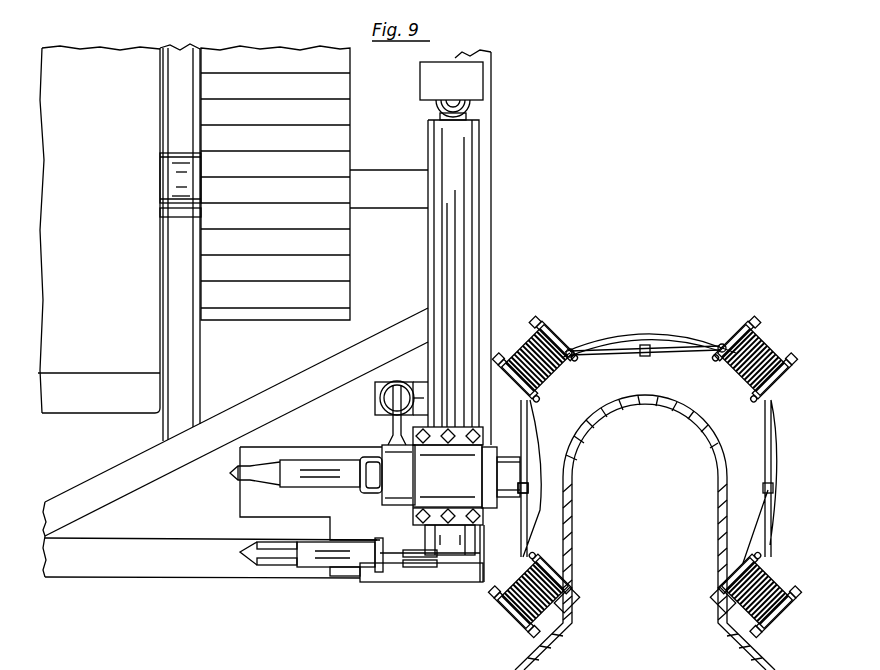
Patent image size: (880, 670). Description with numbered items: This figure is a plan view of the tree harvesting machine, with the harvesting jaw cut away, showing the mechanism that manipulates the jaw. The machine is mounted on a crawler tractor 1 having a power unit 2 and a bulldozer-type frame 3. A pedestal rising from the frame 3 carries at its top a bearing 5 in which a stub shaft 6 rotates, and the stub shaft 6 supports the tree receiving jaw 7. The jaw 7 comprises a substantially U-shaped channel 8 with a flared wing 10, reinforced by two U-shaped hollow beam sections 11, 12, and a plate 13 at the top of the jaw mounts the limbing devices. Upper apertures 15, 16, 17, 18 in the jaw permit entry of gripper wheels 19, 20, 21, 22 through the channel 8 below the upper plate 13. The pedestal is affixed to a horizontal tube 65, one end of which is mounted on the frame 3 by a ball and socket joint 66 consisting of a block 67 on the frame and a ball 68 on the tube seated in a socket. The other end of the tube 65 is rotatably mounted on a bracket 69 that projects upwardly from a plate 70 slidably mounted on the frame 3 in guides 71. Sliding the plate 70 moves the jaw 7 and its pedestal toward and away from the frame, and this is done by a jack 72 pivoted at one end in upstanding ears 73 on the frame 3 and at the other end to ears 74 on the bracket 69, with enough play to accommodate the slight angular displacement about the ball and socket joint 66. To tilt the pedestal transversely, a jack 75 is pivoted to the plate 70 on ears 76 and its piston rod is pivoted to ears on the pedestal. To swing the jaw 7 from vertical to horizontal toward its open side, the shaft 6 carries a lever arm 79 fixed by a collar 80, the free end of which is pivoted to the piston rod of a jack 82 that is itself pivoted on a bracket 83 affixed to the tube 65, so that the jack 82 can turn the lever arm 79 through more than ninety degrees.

The crawler tractor 1 is at (80, 458).
The power unit 2 is at (100, 296).
The frame 3 is at (99, 576).
The bearing 5 is at (455, 488).
The stub shaft 6 is at (503, 447).
The tree receiving jaw 7 is at (624, 333).
The U-shaped channel 8 is at (645, 527).
The flared wing 10 is at (531, 40).
The U-shaped hollow beam section 11 is at (285, 321).
The U-shaped hollow beam section 12 is at (214, 377).
The plate 13 is at (391, 378).
The upper aperture 15 is at (573, 539).
The upper aperture 16 is at (595, 414).
The upper aperture 17 is at (695, 420).
The upper aperture 18 is at (719, 541).
The gripper wheel 19 is at (568, 572).
The gripper wheel 20 is at (560, 396).
The gripper wheel 21 is at (745, 400).
The gripper wheel 22 is at (722, 569).
The horizontal tube 65 is at (480, 160).
The ball and socket joint 66 is at (419, 86).
The block 67 is at (486, 80).
The ball 68 is at (470, 108).
The bracket 69 is at (463, 566).
The plate 70 is at (238, 500).
The guides 71 is at (388, 583).
The jack 72 is at (357, 542).
The upstanding ears 73 is at (252, 550).
The ears 74 is at (413, 550).
The jack 75 is at (320, 462).
The ears 76 is at (238, 470).
The lever arm 79 is at (393, 428).
The collar 80 is at (398, 475).
The jack 82 is at (403, 382).
The bracket 83 is at (424, 397).